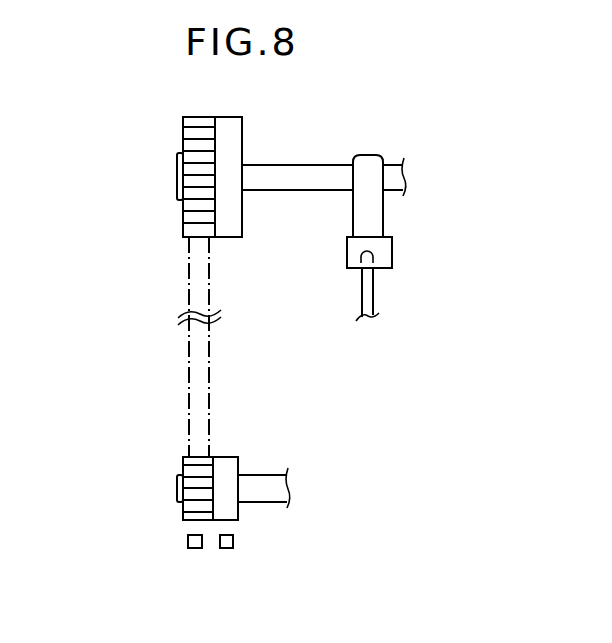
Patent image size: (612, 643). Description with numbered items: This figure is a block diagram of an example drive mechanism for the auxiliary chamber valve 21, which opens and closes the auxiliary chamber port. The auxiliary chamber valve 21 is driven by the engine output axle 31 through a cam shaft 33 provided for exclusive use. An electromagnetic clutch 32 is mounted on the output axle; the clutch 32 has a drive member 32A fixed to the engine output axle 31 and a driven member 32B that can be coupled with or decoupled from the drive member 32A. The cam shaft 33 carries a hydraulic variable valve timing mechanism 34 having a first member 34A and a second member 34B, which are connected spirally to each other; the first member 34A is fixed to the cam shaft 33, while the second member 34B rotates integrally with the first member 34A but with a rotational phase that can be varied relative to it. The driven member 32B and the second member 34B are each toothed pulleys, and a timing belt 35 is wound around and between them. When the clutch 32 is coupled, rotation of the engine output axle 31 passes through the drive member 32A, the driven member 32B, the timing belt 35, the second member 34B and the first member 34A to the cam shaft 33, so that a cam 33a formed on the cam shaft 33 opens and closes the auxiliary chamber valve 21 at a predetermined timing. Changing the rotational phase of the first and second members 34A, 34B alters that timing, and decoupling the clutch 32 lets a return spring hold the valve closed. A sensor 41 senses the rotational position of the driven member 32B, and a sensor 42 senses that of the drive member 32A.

The auxiliary chamber valve 21 is at (375, 296).
The engine output axle 31 is at (265, 496).
The clutch 32 is at (226, 432).
The drive member 32A is at (235, 462).
The driven member 32B is at (183, 462).
The cam shaft 33 is at (325, 180).
The cam 33a is at (368, 165).
The variable valve timing mechanism 34 is at (155, 165).
The first member 34A is at (232, 153).
The second member 34B is at (190, 133).
The timing belt 35 is at (212, 291).
The sensor 41 is at (193, 548).
The sensor 42 is at (226, 548).